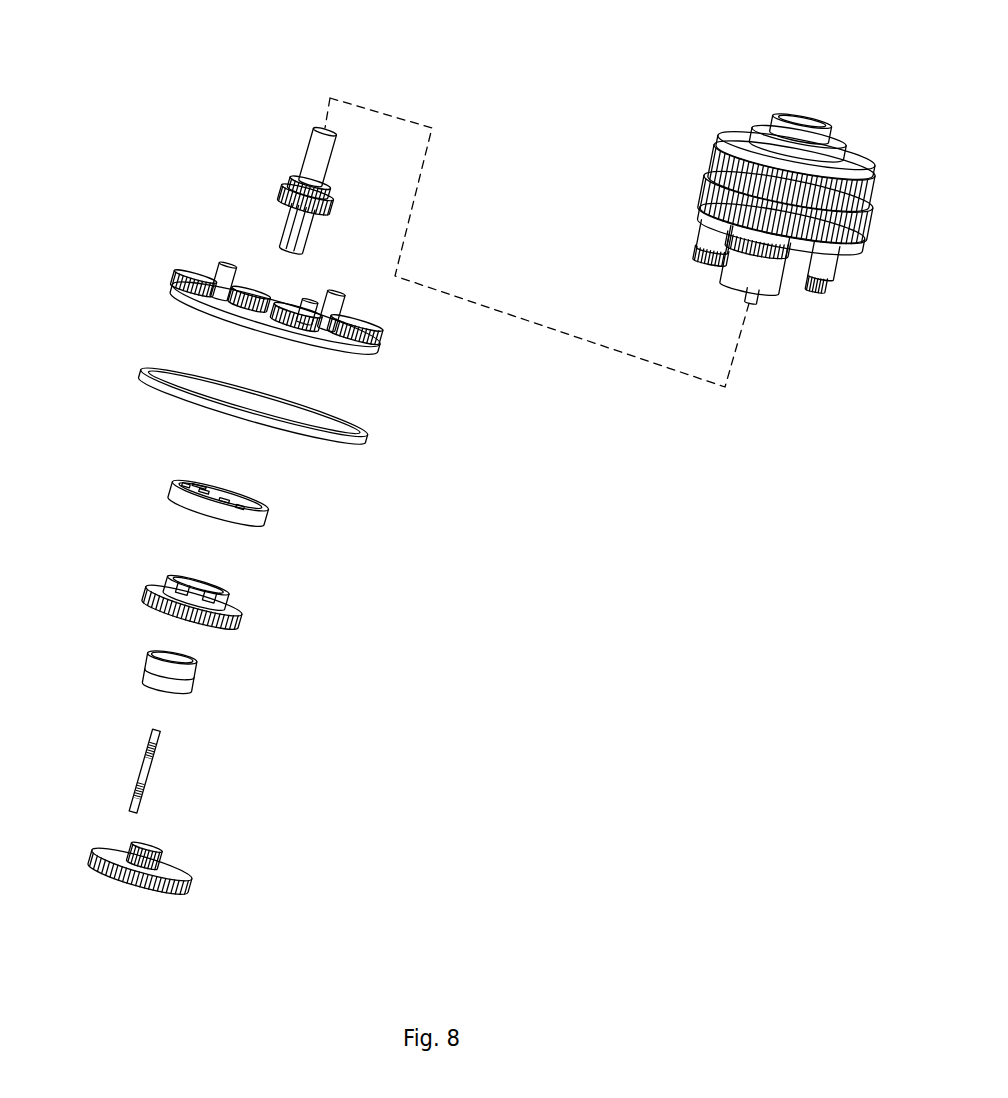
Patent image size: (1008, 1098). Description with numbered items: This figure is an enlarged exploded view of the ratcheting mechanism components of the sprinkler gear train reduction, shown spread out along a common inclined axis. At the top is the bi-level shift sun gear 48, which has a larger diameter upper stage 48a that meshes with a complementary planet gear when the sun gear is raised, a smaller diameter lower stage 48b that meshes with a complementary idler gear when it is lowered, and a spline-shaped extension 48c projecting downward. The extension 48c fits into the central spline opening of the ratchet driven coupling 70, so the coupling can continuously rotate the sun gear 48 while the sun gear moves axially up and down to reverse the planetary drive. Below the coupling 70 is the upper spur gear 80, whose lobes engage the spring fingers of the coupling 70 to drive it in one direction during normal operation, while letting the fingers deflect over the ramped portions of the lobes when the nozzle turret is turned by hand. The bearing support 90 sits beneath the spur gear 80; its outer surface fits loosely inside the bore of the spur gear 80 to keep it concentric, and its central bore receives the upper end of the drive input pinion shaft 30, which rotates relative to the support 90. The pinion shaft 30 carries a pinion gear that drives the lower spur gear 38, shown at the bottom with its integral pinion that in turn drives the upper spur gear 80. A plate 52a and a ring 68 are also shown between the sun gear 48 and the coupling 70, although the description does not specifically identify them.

The bi-level shift sun gear 48 is at (293, 122).
The larger diameter upper stage 48a is at (317, 157).
The smaller diameter lower stage 48b is at (306, 195).
The spline-shaped extension 48c is at (297, 229).
The planet gear carrier plate 52a is at (360, 347).
The ring 68 is at (358, 435).
The ratchet driven coupling 70 is at (268, 523).
The upper spur gear 80 is at (227, 587).
The bearing support 90 is at (193, 688).
The drive input pinion shaft 30 is at (147, 775).
The lower spur gear 38 is at (183, 890).